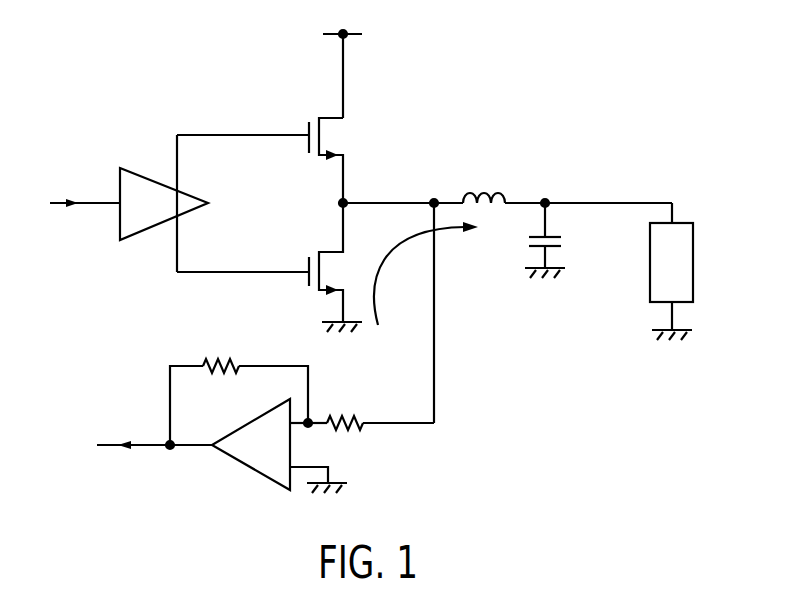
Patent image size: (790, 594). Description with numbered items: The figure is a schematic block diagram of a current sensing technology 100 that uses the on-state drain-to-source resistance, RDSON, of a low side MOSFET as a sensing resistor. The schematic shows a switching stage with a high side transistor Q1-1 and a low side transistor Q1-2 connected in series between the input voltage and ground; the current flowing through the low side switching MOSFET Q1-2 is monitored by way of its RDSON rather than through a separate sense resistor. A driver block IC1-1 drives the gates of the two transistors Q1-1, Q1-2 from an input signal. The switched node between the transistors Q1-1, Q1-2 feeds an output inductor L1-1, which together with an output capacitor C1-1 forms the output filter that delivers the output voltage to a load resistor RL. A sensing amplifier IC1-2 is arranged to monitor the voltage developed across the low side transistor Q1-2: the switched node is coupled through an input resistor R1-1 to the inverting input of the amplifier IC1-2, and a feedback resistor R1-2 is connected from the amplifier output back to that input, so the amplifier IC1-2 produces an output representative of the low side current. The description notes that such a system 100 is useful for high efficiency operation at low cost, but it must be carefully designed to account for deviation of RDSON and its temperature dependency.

The current sensing technology 100 is at (116, 96).
The high-side transistor Q1-1 is at (292, 160).
The low-side transistor Q1-2 is at (272, 267).
The driver amplifier IC1-1 is at (129, 203).
The operational amplifier IC1-2 is at (222, 449).
The inductor L1-1 is at (567, 175).
The output capacitor C1-1 is at (566, 240).
The input resistor R1-1 is at (371, 316).
The feedback resistor R1-2 is at (239, 386).
The load resistor RL is at (671, 271).